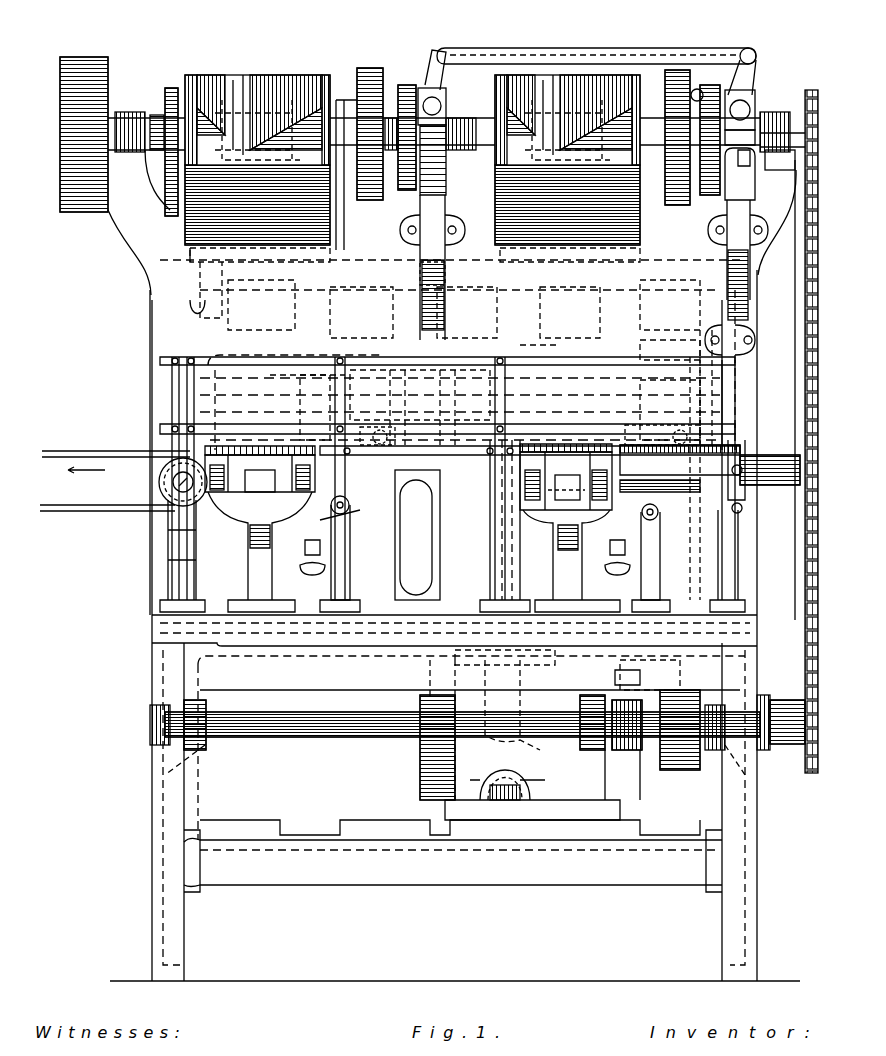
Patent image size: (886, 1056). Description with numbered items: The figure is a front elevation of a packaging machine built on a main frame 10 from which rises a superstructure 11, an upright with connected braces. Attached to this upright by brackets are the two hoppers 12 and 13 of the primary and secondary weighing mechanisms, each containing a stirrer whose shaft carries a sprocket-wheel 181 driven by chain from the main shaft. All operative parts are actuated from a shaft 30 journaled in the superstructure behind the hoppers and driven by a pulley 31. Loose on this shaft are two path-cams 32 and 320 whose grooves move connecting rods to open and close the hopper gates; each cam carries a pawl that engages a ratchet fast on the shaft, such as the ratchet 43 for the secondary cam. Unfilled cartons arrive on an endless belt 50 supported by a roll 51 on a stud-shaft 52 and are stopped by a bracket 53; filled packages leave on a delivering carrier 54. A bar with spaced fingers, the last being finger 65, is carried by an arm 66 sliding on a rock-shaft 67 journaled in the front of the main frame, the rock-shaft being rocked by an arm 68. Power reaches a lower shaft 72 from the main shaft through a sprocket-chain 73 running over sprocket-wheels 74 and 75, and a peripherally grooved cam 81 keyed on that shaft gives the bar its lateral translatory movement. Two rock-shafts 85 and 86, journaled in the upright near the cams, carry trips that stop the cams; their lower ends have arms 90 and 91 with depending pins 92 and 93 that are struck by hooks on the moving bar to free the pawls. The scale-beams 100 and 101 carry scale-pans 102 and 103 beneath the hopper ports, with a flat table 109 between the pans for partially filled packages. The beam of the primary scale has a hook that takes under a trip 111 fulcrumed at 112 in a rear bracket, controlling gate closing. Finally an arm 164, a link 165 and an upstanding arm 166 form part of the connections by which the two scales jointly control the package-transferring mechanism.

The main frame 10 is at (150, 822).
The superstructure 11 is at (146, 294).
The hopper 12 is at (565, 78).
The hopper 13 is at (262, 75).
The shaft 30 is at (445, 90).
The pulley 31 is at (96, 57).
The path-cam 32 is at (684, 70).
The ratchet 43 is at (424, 95).
The endless belt 50 is at (730, 525).
The roll 51 is at (700, 460).
The stud-shaft 52 is at (800, 490).
The bracket 53 is at (725, 440).
The delivering carrier 54 is at (85, 475).
The finger 65 is at (180, 485).
The arm 66 is at (180, 497).
The rock-shaft 67 is at (372, 845).
The arm 68 is at (628, 770).
The shaft 72 is at (335, 735).
The sprocket-chain 73 is at (803, 282).
The sprocket-wheel 74 is at (805, 96).
The sprocket-wheel 75 is at (808, 765).
The peripherally grooved cam 81 is at (460, 718).
The rock-shaft 85 is at (750, 345).
The rock-shaft 86 is at (440, 320).
The arm 90 is at (650, 410).
The arm 91 is at (338, 385).
The pin 92 is at (645, 400).
The pin 93 is at (307, 407).
The scale-beam 100 is at (555, 495).
The scale-beam 101 is at (300, 470).
The scale-pan 102 is at (540, 460).
The scale-pan 103 is at (244, 450).
The table 109 is at (410, 485).
The trip 111 is at (608, 520).
The fulcrum 112 is at (654, 520).
The arm 164 is at (752, 62).
The link 165 is at (635, 52).
The upstanding arm 166 is at (406, 85).
The sprocket-wheel 181 is at (166, 100).
The path-cam 320 is at (368, 68).